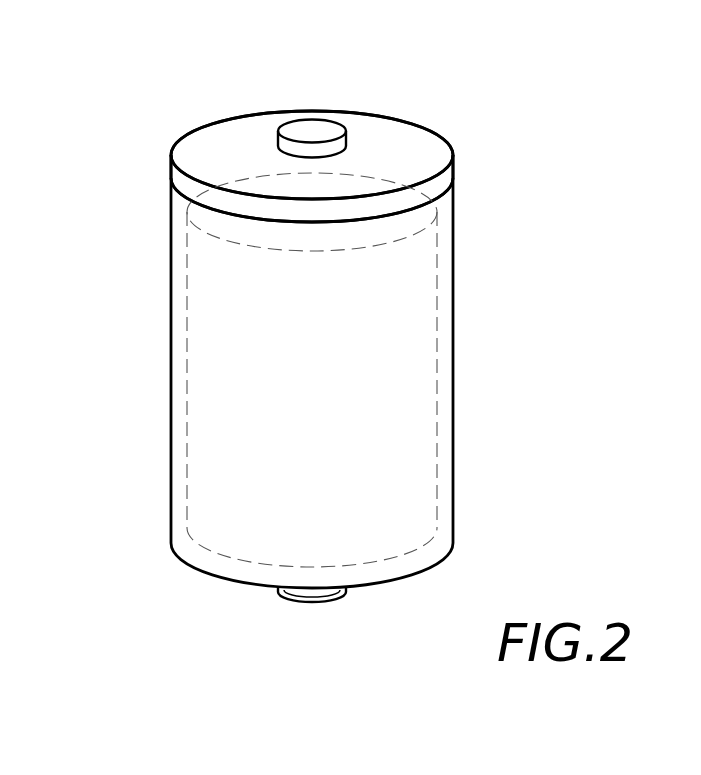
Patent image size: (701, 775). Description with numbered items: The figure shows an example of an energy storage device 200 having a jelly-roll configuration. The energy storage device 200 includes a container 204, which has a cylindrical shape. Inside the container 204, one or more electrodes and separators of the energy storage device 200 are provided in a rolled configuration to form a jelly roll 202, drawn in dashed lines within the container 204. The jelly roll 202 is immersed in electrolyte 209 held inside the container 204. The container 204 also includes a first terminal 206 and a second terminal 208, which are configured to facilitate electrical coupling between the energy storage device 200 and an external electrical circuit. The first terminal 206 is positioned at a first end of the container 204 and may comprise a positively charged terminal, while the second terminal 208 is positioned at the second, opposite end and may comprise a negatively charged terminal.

The energy storage device 200 is at (146, 98).
The jelly roll 202 is at (190, 387).
The container 204 is at (455, 208).
The first terminal 206 is at (324, 133).
The second terminal 208 is at (323, 596).
The electrolyte 209 is at (202, 483).